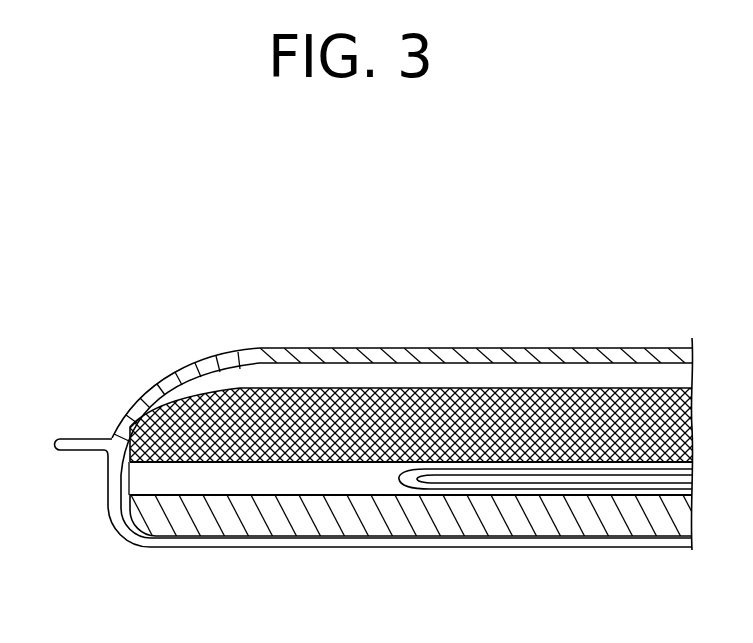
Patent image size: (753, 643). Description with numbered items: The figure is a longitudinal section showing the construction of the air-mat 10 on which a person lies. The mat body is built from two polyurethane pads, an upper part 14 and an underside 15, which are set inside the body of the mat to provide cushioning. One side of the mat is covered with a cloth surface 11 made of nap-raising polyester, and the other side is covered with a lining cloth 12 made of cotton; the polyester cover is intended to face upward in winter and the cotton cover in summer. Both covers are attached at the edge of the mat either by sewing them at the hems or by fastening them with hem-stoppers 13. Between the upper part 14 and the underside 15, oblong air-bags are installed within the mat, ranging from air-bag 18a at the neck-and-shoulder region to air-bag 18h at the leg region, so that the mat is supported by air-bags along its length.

The air-mat 10 is at (352, 323).
The cloth surface 11 is at (497, 357).
The lining cloth 12 is at (600, 548).
The hem-stoppers 13 is at (74, 437).
The upper part 14 is at (611, 385).
The underside 15 is at (227, 520).
The air-bag 18a is at (521, 547).
The air-bag 18h is at (412, 480).